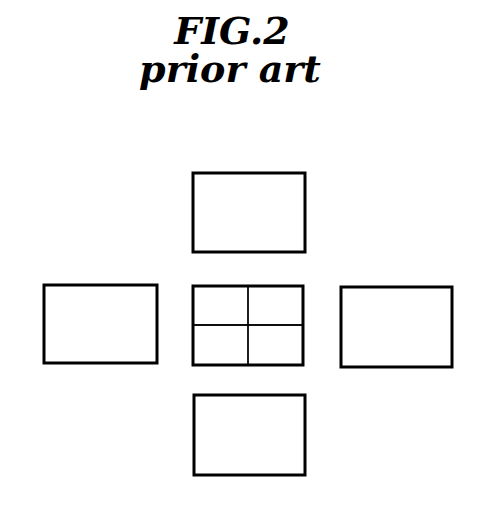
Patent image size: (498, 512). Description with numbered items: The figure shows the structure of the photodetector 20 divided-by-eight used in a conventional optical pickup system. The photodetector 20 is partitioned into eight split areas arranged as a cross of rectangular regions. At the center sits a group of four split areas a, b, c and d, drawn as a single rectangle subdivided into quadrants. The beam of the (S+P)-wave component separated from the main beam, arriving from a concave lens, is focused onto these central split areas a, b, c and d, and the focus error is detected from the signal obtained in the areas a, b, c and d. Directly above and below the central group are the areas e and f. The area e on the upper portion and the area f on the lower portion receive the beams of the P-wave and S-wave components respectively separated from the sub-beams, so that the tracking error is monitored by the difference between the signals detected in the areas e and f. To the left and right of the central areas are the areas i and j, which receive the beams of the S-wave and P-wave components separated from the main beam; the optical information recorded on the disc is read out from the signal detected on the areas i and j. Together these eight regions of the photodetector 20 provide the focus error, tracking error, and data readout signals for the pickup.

The photodetector divided-by-eight 20 is at (342, 217).
The upper split area e is at (249, 212).
The side split area i is at (100, 324).
The side split area j is at (396, 327).
The lower split area f is at (249, 435).
The central split area a is at (220, 305).
The central split area b is at (275, 305).
The central split area c is at (220, 345).
The central split area d is at (275, 345).